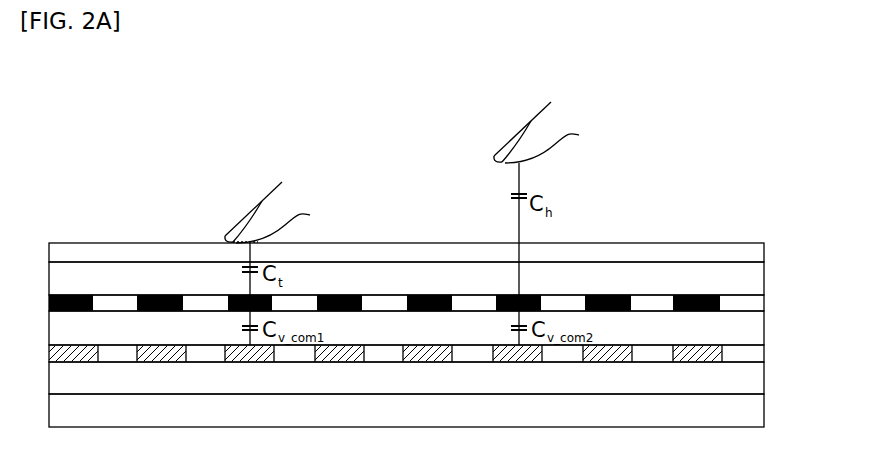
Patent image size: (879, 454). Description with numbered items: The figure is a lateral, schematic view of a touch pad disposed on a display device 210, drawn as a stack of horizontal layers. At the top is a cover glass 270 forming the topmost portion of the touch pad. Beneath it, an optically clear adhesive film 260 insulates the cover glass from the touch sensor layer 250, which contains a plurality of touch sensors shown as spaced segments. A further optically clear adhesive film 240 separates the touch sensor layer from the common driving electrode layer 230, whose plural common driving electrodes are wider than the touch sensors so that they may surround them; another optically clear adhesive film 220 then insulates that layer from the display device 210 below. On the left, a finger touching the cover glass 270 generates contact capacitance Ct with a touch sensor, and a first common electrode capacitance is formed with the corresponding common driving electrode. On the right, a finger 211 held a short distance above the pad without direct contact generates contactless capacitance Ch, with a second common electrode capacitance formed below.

The display device 210 is at (766, 411).
The finger 211 is at (537, 115).
The optically clear adhesive film 220 is at (766, 381).
The common driving electrode layer 230 is at (766, 354).
The optically clear adhesive film 240 is at (766, 328).
The touch sensor layer 250 is at (766, 304).
The optically clear adhesive film 260 is at (766, 280).
The cover glass 270 is at (766, 251).